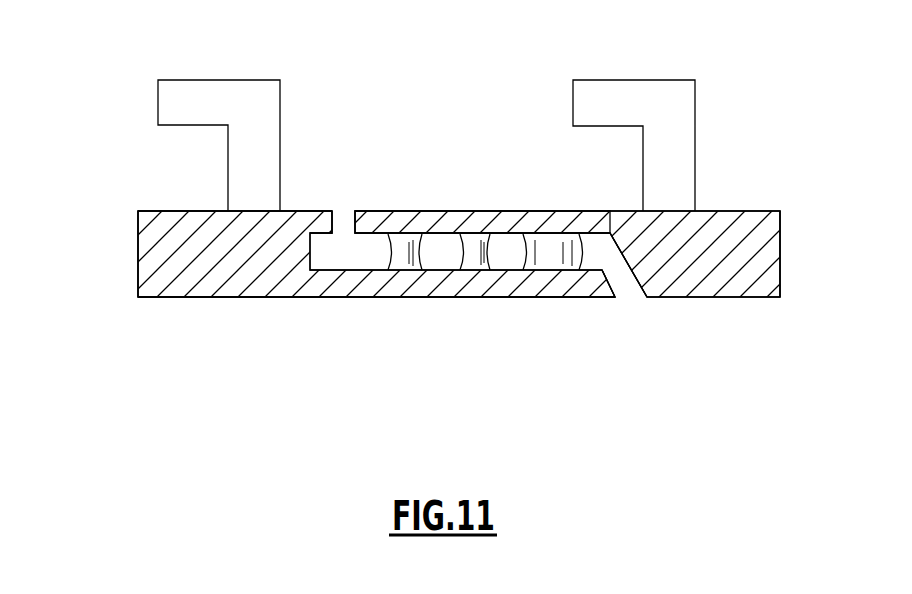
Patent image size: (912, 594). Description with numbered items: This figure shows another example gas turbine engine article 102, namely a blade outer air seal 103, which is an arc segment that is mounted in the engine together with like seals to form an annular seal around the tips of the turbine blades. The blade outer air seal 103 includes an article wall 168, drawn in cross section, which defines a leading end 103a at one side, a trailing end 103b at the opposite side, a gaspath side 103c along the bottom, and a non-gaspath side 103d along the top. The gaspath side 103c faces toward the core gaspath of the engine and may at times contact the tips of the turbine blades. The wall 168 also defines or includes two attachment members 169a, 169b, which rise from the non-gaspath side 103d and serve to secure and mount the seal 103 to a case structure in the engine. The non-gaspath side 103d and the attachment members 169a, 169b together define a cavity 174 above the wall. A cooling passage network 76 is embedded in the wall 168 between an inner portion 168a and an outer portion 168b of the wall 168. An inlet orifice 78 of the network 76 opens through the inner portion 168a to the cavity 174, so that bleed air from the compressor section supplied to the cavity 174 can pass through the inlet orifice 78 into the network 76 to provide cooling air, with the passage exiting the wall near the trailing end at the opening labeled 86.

The gas turbine engine article 102 is at (126, 322).
The blade outer air seal 103 is at (740, 220).
The leading end 103a is at (138, 243).
The trailing end 103b is at (780, 256).
The gaspath side 103c is at (235, 297).
The non-gaspath side 103d is at (297, 211).
The article wall 168 is at (219, 262).
The inner portion 168a is at (512, 212).
The outer portion 168b is at (483, 298).
The inlet orifice 78 is at (334, 224).
The fluid outlet 86 is at (612, 278).
The cooling passage network 76 is at (437, 255).
The cavity 174 is at (456, 151).
The attachment member 169a is at (281, 103).
The attachment member 169b is at (697, 105).